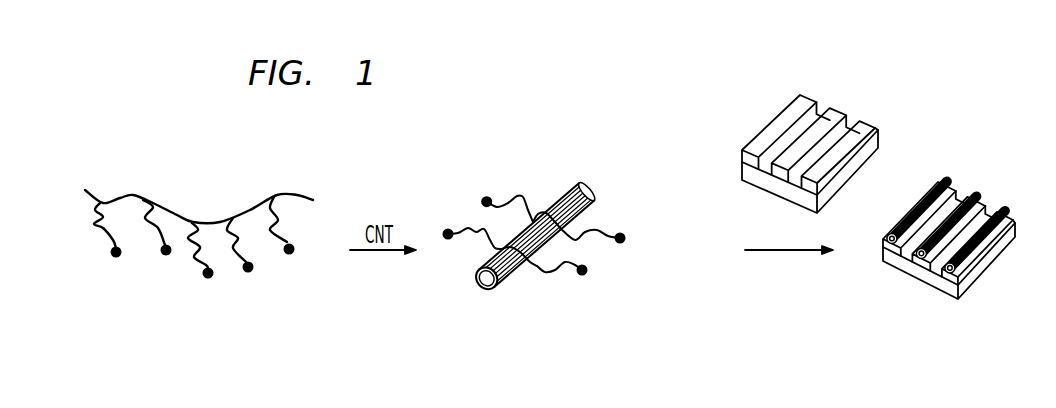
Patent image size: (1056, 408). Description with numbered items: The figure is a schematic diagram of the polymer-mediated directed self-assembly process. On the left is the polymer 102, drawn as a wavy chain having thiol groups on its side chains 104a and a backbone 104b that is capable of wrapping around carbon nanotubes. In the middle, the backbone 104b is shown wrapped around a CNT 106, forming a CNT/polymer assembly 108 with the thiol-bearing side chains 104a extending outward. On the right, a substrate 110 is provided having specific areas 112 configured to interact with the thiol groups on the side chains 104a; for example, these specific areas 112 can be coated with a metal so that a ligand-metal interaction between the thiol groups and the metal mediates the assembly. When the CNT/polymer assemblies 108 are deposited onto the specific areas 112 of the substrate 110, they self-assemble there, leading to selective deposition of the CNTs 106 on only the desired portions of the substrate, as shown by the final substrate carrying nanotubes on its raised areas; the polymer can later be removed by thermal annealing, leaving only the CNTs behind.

The polymer 102 is at (218, 288).
The side chains 104a is at (116, 258).
The backbone 104b is at (136, 193).
The CNTs 106 is at (588, 192).
The CNT/polymer assemblies 108 is at (522, 174).
The substrate 110 is at (822, 134).
The specific areas 112 is at (868, 132).